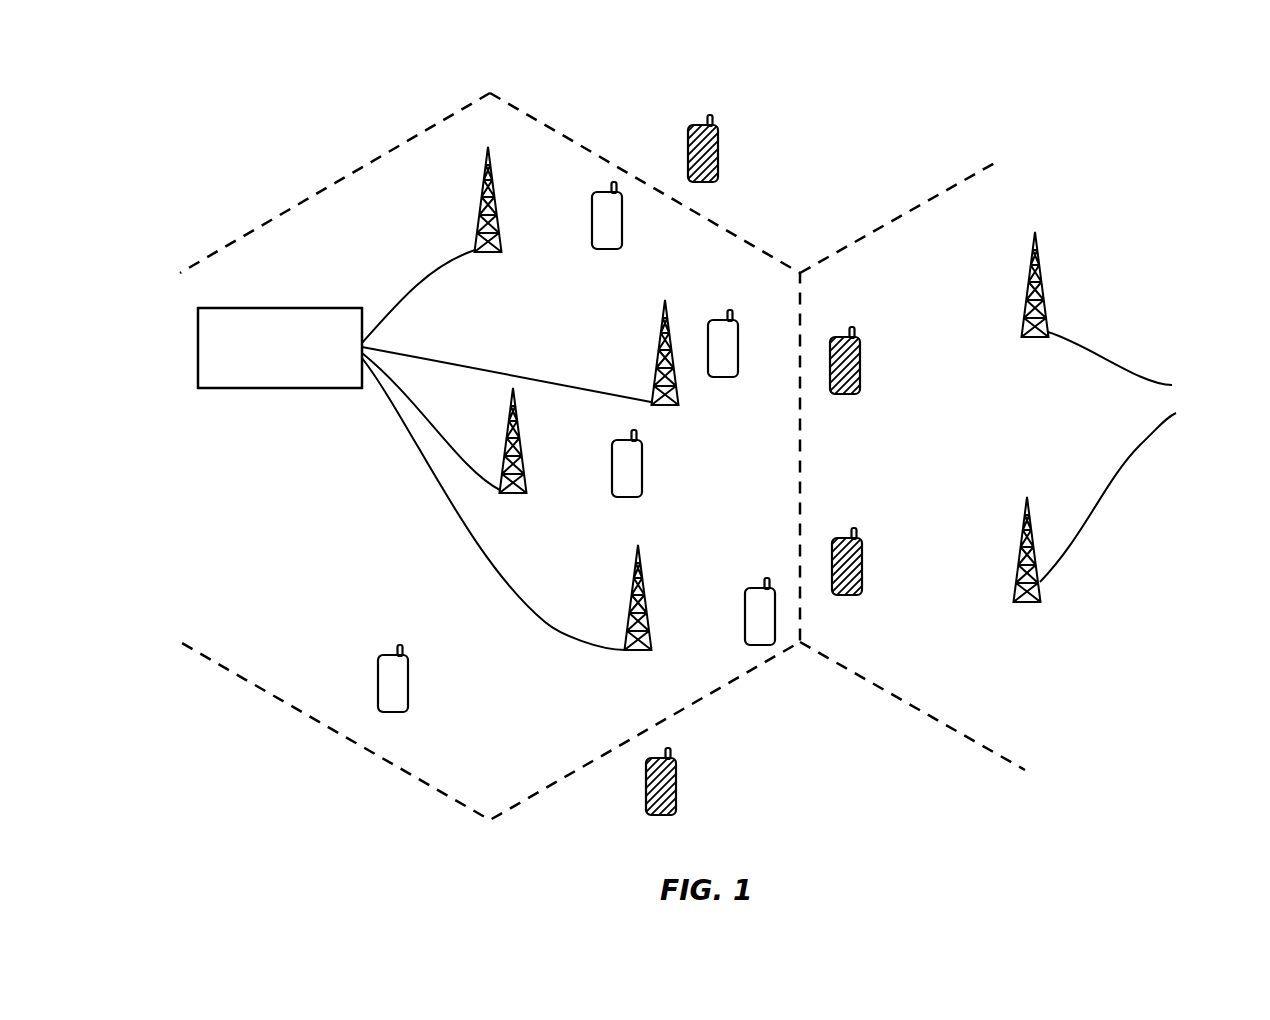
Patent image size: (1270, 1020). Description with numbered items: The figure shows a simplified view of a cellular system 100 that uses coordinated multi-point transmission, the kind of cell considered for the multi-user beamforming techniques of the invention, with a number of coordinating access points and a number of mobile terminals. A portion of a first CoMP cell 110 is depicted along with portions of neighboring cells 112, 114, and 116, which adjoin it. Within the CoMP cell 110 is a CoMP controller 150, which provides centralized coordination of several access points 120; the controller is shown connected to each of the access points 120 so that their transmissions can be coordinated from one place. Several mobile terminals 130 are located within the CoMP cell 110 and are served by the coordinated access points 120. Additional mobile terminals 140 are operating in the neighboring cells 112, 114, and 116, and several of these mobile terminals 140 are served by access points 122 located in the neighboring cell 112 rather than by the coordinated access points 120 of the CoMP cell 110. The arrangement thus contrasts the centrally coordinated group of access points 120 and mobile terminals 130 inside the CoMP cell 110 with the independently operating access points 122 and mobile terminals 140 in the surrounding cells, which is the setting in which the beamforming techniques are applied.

The wireless communication system 100 is at (1030, 98).
The first CoMP cell 110 is at (616, 740).
The neighboring cell 112 is at (975, 712).
The neighboring cell 114 is at (935, 182).
The neighboring cell 116 is at (818, 700).
The access point 120 is at (476, 232).
The access point 122 is at (1043, 305).
The mobile terminal 130 is at (610, 249).
The mobile terminal 140 is at (707, 182).
The CoMP controller 150 is at (262, 380).